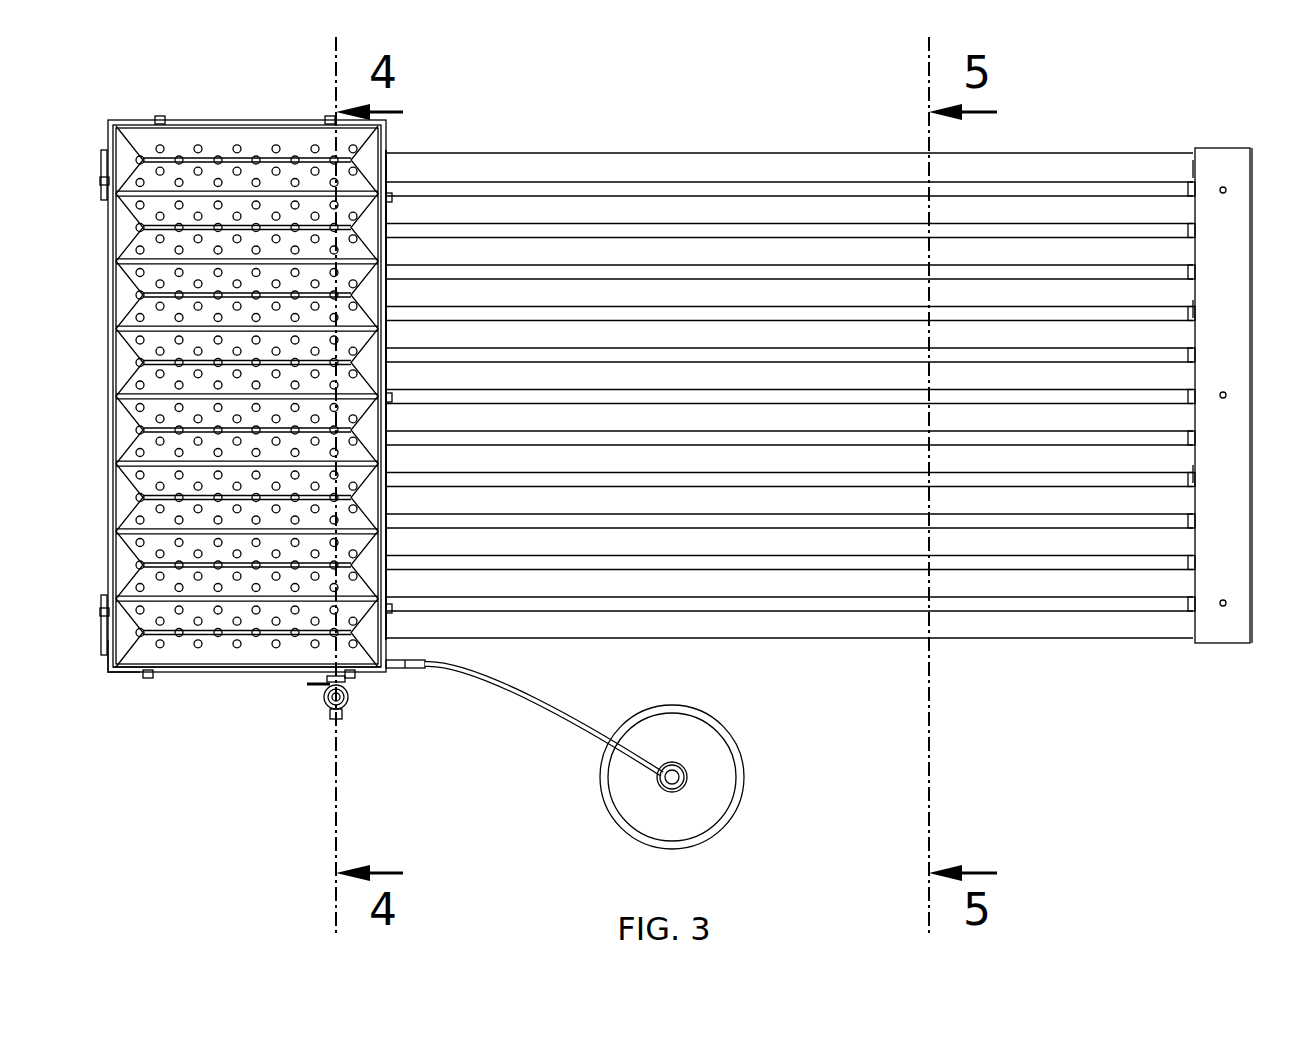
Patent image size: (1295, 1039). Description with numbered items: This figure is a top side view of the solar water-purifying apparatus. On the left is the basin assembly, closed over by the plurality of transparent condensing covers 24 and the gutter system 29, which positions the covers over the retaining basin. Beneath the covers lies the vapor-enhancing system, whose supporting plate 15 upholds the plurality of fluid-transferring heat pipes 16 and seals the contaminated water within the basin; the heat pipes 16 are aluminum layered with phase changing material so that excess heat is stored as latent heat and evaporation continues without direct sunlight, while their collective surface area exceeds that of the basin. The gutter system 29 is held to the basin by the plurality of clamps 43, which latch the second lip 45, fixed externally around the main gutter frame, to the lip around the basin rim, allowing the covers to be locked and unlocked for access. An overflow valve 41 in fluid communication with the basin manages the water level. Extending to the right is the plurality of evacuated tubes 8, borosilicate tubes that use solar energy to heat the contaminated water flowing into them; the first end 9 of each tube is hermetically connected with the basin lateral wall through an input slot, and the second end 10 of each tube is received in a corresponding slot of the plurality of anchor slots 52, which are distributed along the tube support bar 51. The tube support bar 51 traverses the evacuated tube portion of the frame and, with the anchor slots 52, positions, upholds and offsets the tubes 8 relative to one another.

The evacuated tubes 8 is at (789, 362).
The first end 9 is at (402, 395).
The second end 10 is at (1182, 396).
The supporting plate 15 is at (255, 130).
The fluid-transferring heat pipes 16 is at (295, 625).
The transparent condensing covers 24 is at (217, 382).
The gutter system 29 is at (240, 674).
The overflow valve 41 is at (350, 702).
The clamps 43 is at (258, 382).
The second lip 45 is at (135, 674).
The tube support bar 51 is at (1225, 150).
The anchor slots 52 is at (1166, 302).